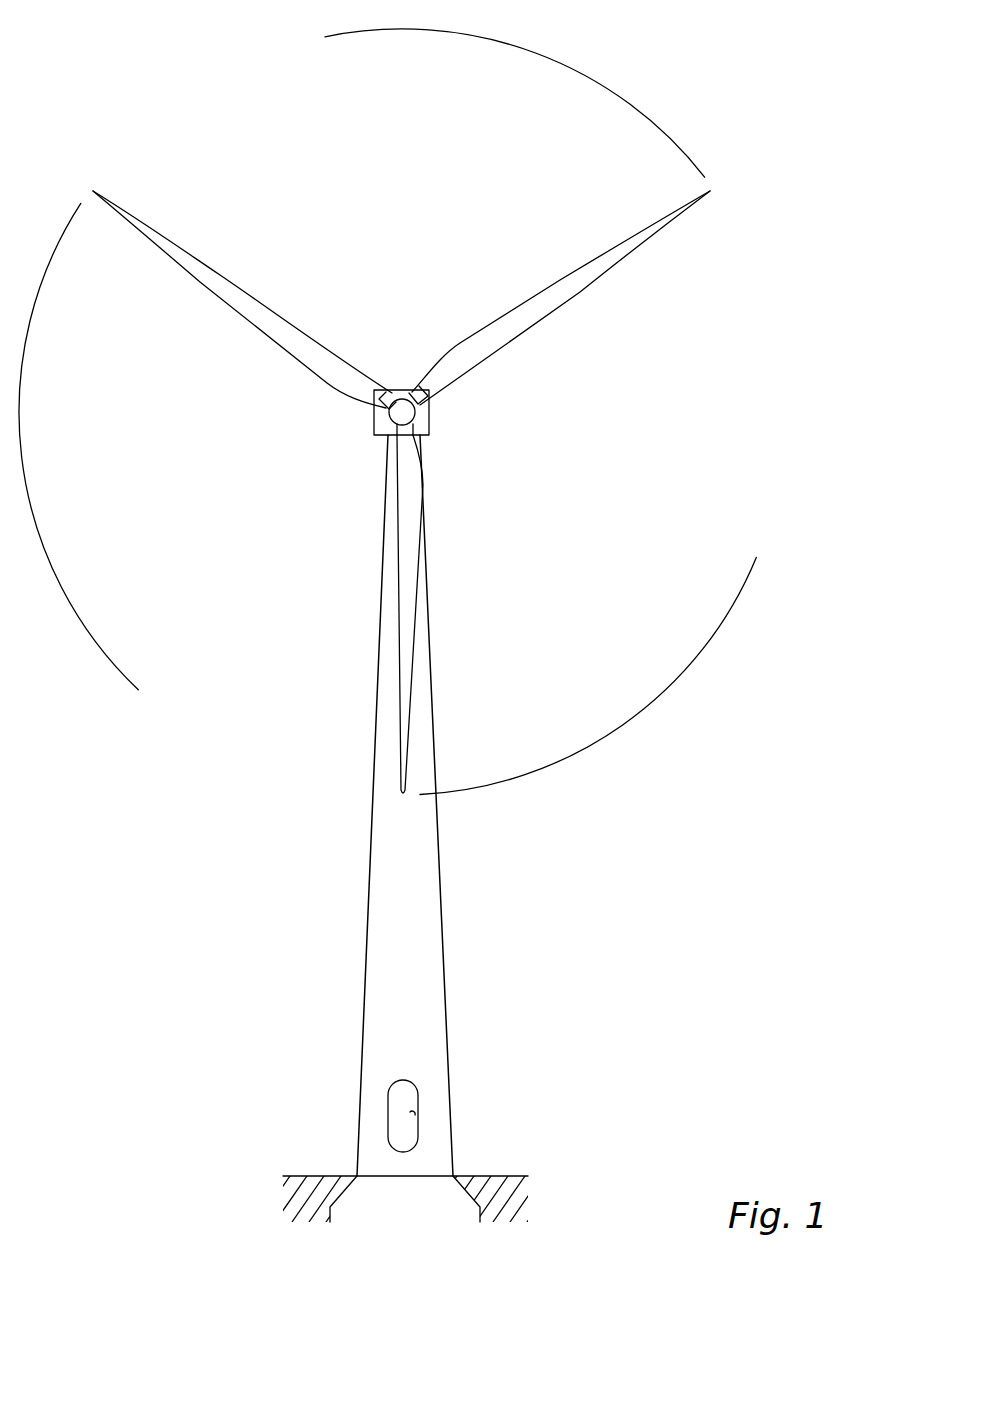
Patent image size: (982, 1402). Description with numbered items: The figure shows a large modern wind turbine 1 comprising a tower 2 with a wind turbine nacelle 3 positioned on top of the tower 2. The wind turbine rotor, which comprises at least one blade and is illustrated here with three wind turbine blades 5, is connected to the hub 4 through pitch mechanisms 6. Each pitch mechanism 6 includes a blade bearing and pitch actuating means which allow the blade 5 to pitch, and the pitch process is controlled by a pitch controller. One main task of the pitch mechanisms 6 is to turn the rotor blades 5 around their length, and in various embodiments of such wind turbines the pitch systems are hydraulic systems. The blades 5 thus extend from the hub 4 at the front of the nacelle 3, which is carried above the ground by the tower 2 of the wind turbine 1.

The wind turbine 1 is at (290, 932).
The tower 2 is at (415, 894).
The wind turbine nacelle 3 is at (430, 428).
The hub 4 is at (402, 410).
The wind turbine blades 5 is at (407, 652).
The pitch mechanisms 6 is at (378, 406).